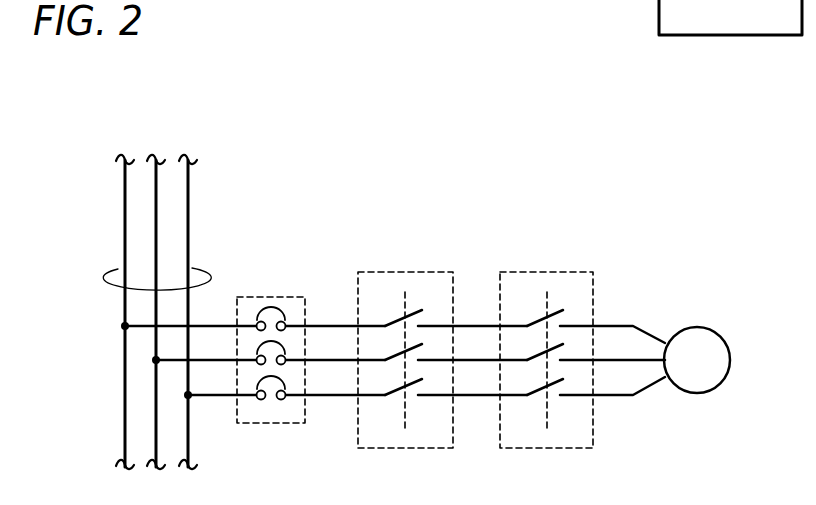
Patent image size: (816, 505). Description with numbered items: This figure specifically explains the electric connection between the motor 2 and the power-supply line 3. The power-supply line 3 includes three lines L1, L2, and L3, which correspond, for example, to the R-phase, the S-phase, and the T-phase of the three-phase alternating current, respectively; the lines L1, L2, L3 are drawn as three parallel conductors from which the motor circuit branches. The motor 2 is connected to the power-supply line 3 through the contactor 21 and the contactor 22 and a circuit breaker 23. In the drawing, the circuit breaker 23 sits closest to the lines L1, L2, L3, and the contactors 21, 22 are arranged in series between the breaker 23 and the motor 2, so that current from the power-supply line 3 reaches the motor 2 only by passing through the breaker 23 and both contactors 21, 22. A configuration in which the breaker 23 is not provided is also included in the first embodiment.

The line L1 is at (125, 195).
The line L2 is at (156, 237).
The line L3 is at (189, 248).
The power-supply line 3 is at (104, 277).
The circuit breaker 23 is at (290, 298).
The contactor 21 is at (428, 273).
The contactor 22 is at (568, 273).
The motor 2 is at (697, 326).